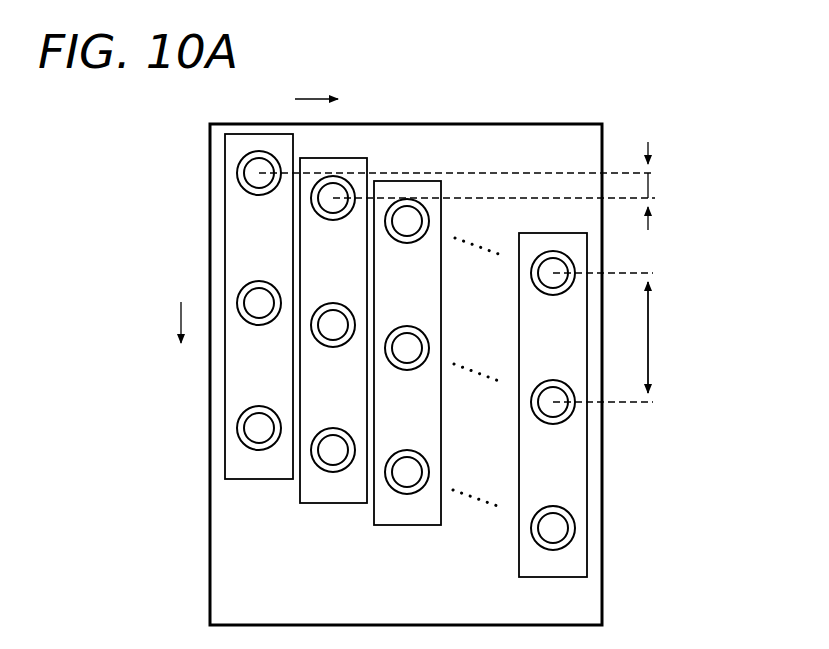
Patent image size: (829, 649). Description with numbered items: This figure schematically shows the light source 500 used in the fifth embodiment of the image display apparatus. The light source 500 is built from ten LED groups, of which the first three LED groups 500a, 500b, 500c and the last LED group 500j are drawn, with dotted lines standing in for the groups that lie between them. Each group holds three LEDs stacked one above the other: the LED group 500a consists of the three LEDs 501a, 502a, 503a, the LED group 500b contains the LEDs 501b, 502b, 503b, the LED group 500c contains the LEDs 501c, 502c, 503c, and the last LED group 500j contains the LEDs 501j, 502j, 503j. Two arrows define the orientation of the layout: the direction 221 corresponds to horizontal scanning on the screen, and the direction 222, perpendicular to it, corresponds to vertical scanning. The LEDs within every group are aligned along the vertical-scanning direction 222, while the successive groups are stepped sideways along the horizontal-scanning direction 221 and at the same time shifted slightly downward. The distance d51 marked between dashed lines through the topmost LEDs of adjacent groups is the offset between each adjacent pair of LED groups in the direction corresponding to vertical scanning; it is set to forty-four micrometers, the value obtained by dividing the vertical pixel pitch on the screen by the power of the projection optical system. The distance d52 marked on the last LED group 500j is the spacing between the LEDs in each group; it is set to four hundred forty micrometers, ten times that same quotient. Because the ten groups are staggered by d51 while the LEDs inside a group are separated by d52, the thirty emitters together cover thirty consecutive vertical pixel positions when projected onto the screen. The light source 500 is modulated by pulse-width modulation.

The light source 500 is at (560, 124).
The LED group 500a is at (252, 480).
The LED group 500b is at (325, 504).
The LED group 500c is at (398, 526).
The LED group 500j is at (545, 578).
The LED 501a is at (263, 196).
The LED 502a is at (263, 326).
The LED 503a is at (262, 405).
The LED 501b is at (337, 221).
The LED 502b is at (337, 348).
The LED 503b is at (336, 428).
The LED 501c is at (411, 244).
The LED 502c is at (411, 371).
The LED 503c is at (410, 450).
The LED 501j is at (557, 296).
The LED 502j is at (557, 425).
The LED 503j is at (556, 506).
The direction corresponding to horizontal scanning 221 is at (310, 97).
The direction corresponding to vertical scanning 222 is at (180, 318).
The distance between adjacent LED groups d51 is at (652, 186).
The distance between LEDs in each LED group d52 is at (650, 350).